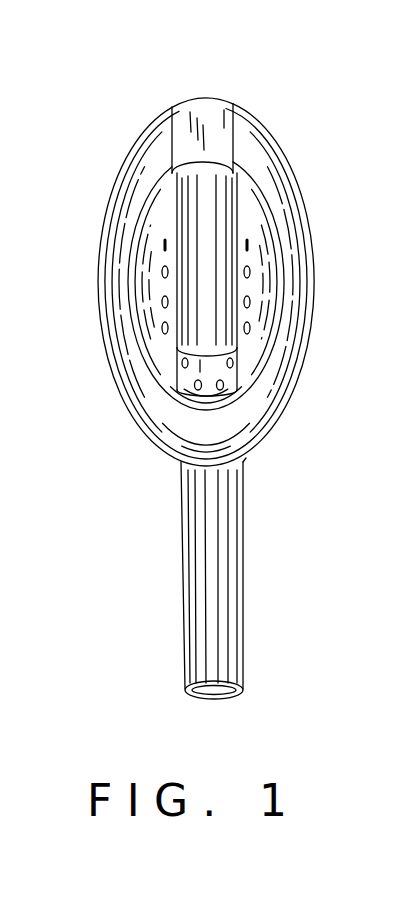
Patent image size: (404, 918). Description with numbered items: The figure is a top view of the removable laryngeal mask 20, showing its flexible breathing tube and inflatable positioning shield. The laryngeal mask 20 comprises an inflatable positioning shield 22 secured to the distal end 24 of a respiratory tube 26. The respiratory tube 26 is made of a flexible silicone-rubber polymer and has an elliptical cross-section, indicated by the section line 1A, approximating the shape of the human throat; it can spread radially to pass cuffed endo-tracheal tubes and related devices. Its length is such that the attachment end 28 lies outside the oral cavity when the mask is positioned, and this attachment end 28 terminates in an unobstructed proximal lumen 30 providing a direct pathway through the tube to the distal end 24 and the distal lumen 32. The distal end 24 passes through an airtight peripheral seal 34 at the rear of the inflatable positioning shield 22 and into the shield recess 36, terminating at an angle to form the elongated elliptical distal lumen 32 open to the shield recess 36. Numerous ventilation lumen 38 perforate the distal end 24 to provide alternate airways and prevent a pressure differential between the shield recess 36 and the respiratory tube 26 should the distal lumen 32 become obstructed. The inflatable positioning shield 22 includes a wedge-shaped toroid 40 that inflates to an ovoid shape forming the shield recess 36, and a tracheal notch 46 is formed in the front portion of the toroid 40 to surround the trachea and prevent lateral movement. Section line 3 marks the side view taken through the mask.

The laryngeal mask 20 is at (209, 378).
The inflatable positioning shield 22 is at (272, 456).
The distal end 24 is at (187, 332).
The respiratory tube 26 is at (179, 503).
The attachment end 28 is at (243, 636).
The proximal lumen 30 is at (188, 688).
The distal lumen 32 is at (205, 306).
The peripheral seal 34 is at (244, 464).
The shield recess 36 is at (245, 214).
The ventilation lumen 38 is at (252, 304).
The wedge-shaped toroid 40 is at (109, 200).
The tracheal notch 46 is at (223, 100).
The section line 3- 3 is at (201, 90).
The section line 1A- 1A is at (172, 593).